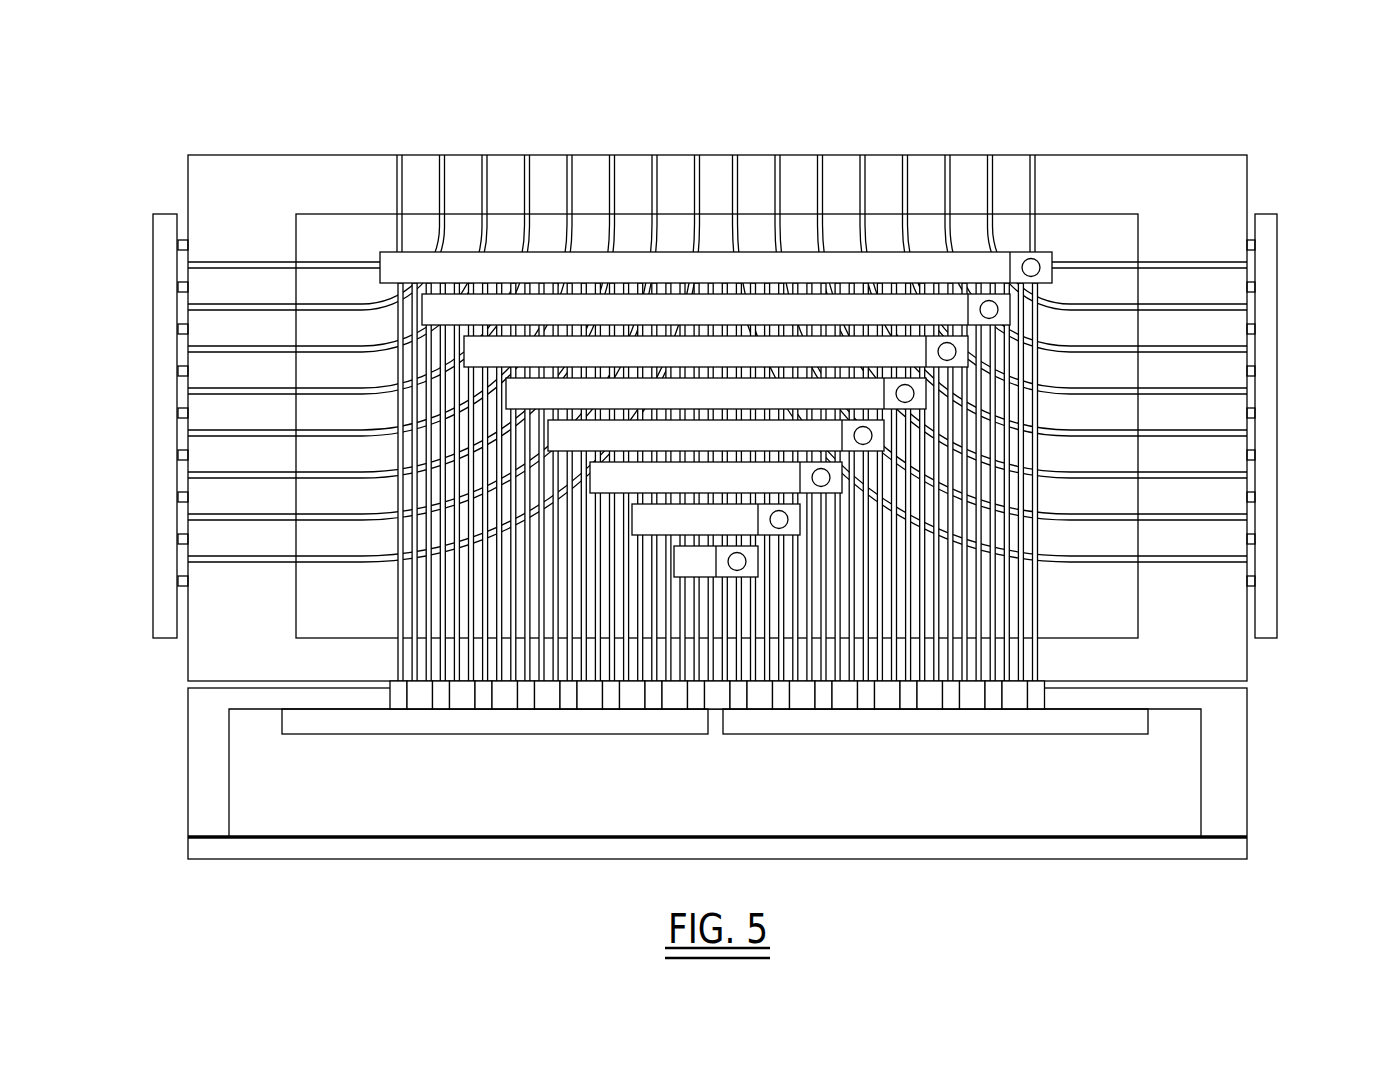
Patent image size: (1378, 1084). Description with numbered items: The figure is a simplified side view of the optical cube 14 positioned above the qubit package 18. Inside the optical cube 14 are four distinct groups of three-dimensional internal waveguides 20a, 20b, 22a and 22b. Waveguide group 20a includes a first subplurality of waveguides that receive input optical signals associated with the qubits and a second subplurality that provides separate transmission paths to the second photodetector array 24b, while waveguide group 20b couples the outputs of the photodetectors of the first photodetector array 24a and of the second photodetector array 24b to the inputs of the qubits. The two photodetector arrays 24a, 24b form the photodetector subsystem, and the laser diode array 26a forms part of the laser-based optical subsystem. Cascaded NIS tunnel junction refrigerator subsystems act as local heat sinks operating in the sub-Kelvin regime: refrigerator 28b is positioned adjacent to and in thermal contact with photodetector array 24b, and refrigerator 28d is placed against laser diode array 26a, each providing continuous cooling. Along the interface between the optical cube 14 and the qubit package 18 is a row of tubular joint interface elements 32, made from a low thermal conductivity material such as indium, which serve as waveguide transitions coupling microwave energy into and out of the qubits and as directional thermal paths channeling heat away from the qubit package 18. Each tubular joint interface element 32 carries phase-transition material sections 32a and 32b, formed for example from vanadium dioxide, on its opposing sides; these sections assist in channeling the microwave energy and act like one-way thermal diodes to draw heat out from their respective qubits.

The optical cube 14 is at (185, 178).
The qubit package 18 is at (228, 790).
The waveguide group 20a is at (717, 303).
The waveguide group 22a is at (1047, 137).
The waveguide group 20b is at (537, 482).
The waveguide group 22b is at (393, 652).
The photodetector array 24a is at (386, 251).
The photodetector array 24b is at (190, 251).
The laser diode array 26a is at (1243, 250).
The cascaded NIS tunnel junction refrigerator subsystem 28b is at (162, 343).
The cascaded NIS tunnel junction refrigerator subsystem 28d is at (1268, 407).
The tubular joint interface element 32 is at (674, 677).
The phase-transition material section 32a is at (1045, 683).
The phase-transition material section 32b is at (1044, 711).